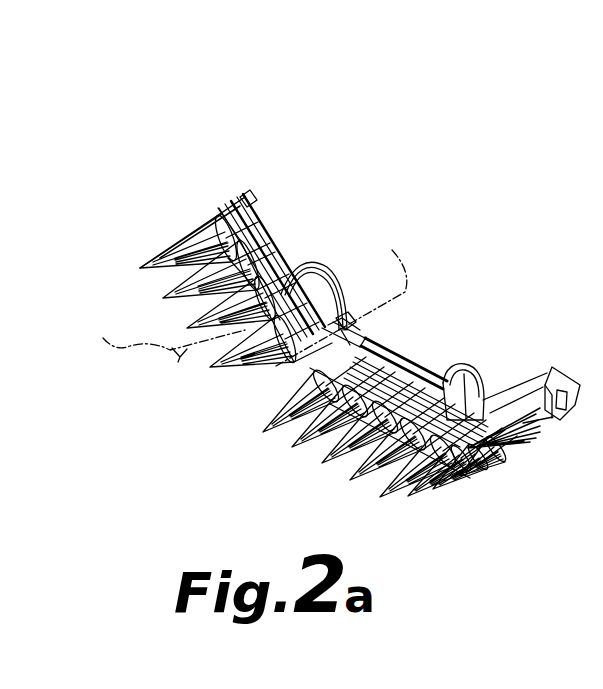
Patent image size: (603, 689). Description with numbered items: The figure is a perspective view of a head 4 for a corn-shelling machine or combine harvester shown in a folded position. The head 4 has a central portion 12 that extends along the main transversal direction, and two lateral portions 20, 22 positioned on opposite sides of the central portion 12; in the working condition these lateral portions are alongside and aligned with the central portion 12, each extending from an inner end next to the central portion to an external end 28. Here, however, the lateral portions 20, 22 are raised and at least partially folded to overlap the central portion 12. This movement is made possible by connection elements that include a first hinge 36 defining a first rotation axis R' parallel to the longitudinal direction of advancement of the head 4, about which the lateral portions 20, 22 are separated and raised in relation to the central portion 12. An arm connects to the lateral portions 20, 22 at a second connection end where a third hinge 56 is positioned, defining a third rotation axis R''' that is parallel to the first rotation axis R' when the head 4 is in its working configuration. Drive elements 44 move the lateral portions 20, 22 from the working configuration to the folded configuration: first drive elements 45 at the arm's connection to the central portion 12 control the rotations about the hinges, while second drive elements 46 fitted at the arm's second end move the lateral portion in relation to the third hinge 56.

The head 4 is at (293, 166).
The central portion 12 is at (414, 326).
The lateral portion 20 is at (206, 180).
The lateral portion 22 is at (532, 360).
The external end 28 is at (591, 119).
The first hinge 36 is at (343, 335).
The drive elements 44 is at (462, 522).
The first drive elements 45 is at (470, 467).
The second drive elements 46 is at (300, 273).
The third hinge 56 is at (165, 242).
The first rotation axis R' is at (341, 295).
The third rotation axis R''' is at (168, 335).